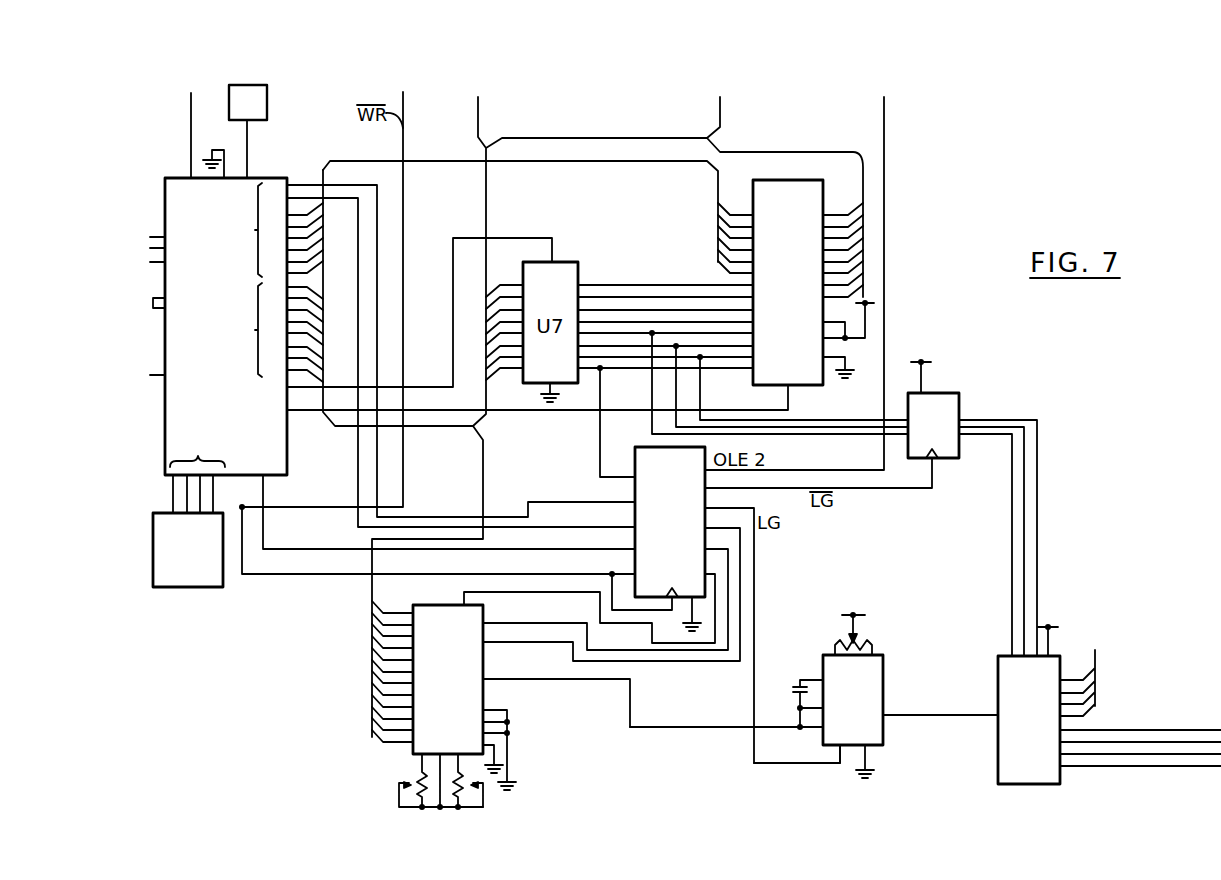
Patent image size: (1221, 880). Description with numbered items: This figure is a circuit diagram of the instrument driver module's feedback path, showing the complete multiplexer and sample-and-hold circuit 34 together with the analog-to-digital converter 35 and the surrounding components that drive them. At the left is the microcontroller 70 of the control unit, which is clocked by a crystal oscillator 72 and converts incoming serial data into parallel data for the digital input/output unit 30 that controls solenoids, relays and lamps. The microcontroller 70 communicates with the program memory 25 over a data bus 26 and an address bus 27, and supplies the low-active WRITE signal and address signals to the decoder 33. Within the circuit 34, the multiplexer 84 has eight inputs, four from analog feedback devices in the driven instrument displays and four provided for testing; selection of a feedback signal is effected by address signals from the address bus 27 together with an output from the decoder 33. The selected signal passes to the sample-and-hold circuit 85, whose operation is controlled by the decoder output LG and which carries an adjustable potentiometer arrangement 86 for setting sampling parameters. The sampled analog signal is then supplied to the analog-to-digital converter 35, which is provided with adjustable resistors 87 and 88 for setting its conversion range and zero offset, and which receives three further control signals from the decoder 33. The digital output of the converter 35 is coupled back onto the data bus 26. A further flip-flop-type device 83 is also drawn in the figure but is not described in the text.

The microcontroller 70 is at (169, 178).
The crystal oscillator 72 is at (267, 104).
The data bus 26 is at (639, 139).
The address bus 27 is at (676, 211).
The memory 25 is at (810, 385).
The decoder 33 is at (637, 447).
The digital input/output unit 30 is at (205, 587).
The flip-flop 83 is at (959, 393).
The multiplexer and sample-and-hold circuit 34 is at (925, 555).
The multiplexer 84 is at (998, 748).
The sample-and-hold circuit 85 is at (883, 745).
The adjustable potentiometer arrangement 86 is at (835, 638).
The adjustable resistor 87 is at (390, 789).
The adjustable resistor 88 is at (496, 798).
The analog-to-digital converter 35 is at (412, 752).